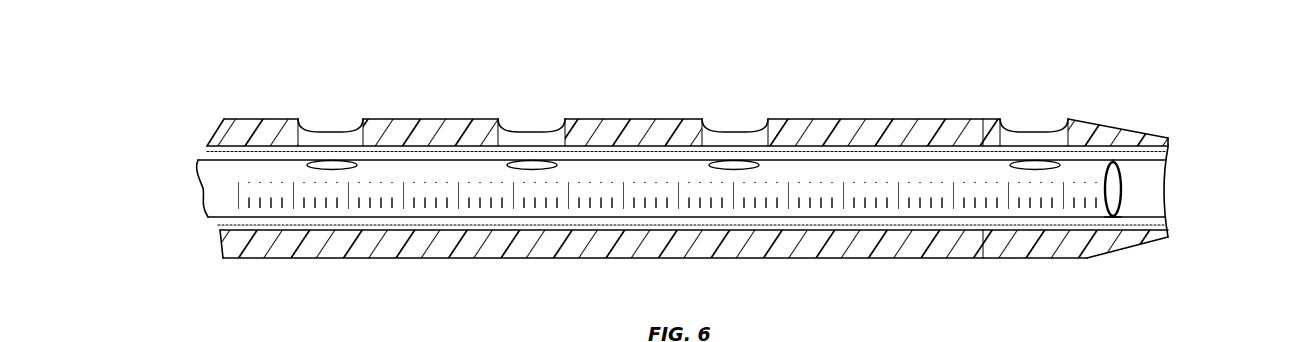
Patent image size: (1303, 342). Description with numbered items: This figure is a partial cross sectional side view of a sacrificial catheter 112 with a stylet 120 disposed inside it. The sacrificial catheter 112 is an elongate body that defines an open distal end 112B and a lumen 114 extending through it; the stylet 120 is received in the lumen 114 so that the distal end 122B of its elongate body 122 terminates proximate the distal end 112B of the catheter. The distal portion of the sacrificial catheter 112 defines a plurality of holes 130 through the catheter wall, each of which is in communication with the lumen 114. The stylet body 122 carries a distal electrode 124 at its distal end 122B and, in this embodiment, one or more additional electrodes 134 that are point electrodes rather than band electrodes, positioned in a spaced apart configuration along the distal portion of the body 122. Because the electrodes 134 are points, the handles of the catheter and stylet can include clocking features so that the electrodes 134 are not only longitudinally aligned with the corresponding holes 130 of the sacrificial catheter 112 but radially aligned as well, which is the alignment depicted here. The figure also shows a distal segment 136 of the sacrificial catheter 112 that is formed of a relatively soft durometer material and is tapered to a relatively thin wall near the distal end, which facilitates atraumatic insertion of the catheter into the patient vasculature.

The sacrificial catheter 112 is at (783, 258).
The distal end of the sacrificial catheter 112B is at (1168, 142).
The lumen 114 is at (1153, 188).
The stylet 120 is at (195, 169).
The elongate body of the stylet 122 is at (228, 187).
The distal end of the stylet body 122B is at (1113, 220).
The distal electrode 124 is at (1122, 195).
The holes 130 is at (317, 132).
The electrodes 134 is at (340, 163).
The distal segment 136 is at (1173, 130).